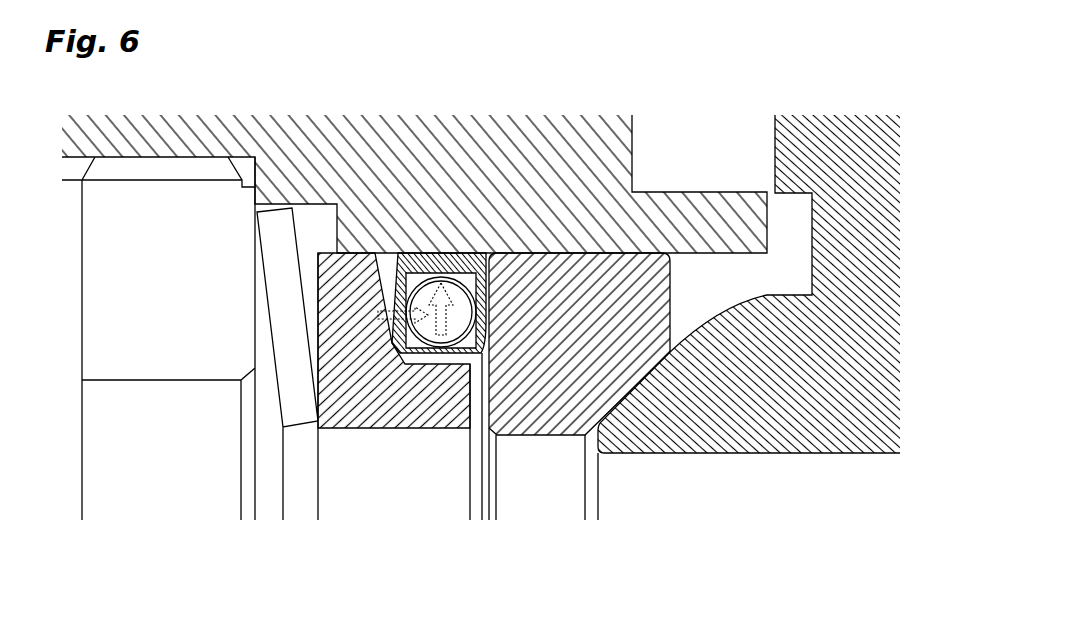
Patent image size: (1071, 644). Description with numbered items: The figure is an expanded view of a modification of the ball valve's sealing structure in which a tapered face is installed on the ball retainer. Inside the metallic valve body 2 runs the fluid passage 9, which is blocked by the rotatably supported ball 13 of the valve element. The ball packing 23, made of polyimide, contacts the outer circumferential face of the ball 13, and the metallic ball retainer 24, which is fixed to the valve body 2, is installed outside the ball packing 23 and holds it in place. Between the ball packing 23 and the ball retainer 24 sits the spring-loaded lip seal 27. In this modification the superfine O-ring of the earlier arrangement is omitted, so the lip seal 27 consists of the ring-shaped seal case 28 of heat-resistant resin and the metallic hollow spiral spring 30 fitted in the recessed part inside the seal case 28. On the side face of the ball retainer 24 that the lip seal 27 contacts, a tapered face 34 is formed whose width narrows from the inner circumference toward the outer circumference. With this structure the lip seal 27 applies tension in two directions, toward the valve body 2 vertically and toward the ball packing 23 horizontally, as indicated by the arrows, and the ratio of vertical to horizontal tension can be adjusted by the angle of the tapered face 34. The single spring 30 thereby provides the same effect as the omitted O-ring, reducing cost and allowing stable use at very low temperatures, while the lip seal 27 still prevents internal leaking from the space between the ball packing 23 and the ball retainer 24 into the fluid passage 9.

The valve body 2 is at (682, 192).
The fluid passage 9 is at (333, 497).
The ball 13 is at (753, 455).
The ball packing 23 is at (532, 437).
The ball retainer 24 is at (420, 428).
The lip seal 27 is at (396, 298).
The seal case 28 is at (472, 258).
The spring 30 is at (441, 353).
The tapered face 34 is at (383, 297).